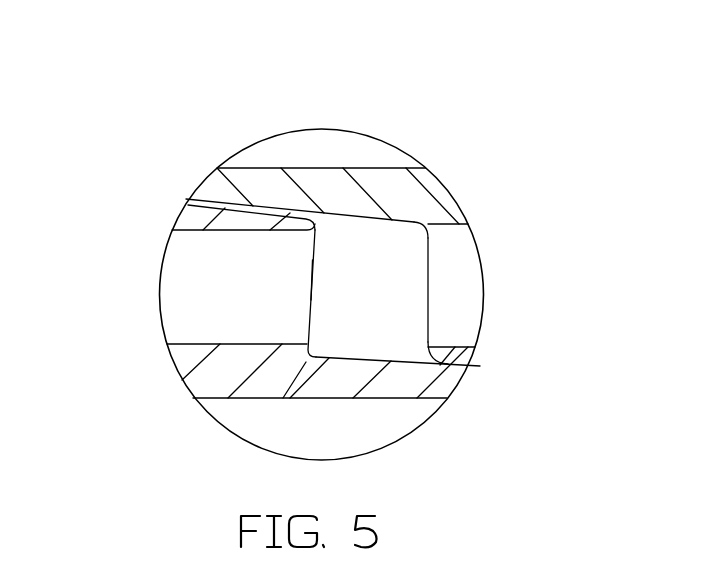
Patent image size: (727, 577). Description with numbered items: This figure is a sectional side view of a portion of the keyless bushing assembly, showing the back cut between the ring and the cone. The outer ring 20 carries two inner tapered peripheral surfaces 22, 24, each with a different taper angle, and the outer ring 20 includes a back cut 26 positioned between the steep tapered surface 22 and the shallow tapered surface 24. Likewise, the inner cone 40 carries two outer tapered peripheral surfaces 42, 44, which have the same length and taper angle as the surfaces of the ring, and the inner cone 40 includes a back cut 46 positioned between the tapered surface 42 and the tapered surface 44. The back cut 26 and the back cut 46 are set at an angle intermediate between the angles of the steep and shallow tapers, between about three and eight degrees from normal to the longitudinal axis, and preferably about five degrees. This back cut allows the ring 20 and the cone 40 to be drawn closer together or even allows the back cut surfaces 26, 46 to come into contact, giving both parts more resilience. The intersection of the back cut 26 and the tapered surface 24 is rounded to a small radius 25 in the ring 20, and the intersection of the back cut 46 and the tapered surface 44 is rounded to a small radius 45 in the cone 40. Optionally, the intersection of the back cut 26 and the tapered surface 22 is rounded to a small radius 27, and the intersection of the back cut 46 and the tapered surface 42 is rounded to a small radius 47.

The outer ring 20 is at (322, 184).
The tapered peripheral surface 22 is at (250, 203).
The tapered peripheral surface 24 is at (473, 343).
The small radius 25 is at (430, 345).
The back cut 26 is at (428, 268).
The small radius 27 is at (428, 240).
The inner cone 40 is at (215, 377).
The tapered peripheral surface 42 is at (190, 205).
The tapered peripheral surface 44 is at (370, 357).
The small radius 45 is at (282, 398).
The back cut 46 is at (312, 277).
The small radius 47 is at (314, 232).